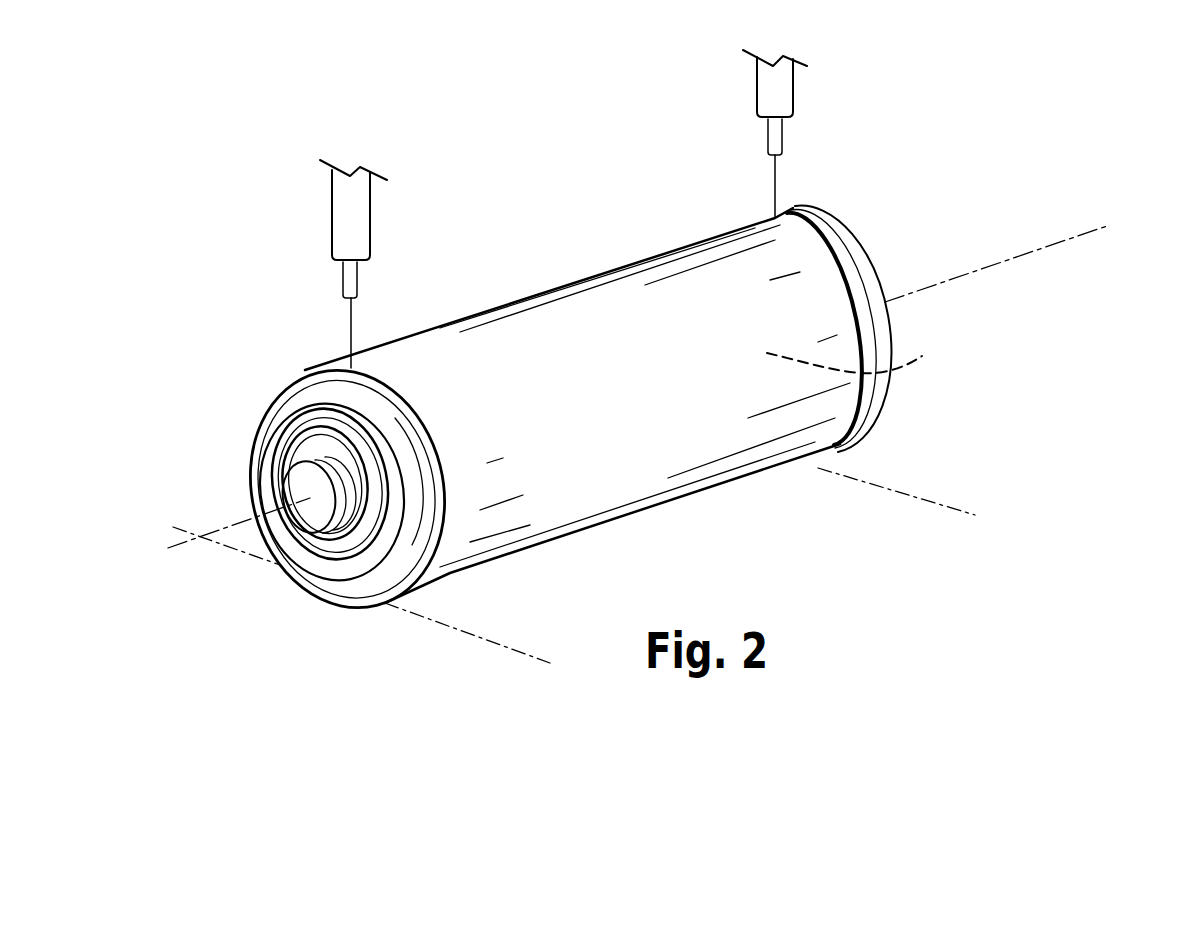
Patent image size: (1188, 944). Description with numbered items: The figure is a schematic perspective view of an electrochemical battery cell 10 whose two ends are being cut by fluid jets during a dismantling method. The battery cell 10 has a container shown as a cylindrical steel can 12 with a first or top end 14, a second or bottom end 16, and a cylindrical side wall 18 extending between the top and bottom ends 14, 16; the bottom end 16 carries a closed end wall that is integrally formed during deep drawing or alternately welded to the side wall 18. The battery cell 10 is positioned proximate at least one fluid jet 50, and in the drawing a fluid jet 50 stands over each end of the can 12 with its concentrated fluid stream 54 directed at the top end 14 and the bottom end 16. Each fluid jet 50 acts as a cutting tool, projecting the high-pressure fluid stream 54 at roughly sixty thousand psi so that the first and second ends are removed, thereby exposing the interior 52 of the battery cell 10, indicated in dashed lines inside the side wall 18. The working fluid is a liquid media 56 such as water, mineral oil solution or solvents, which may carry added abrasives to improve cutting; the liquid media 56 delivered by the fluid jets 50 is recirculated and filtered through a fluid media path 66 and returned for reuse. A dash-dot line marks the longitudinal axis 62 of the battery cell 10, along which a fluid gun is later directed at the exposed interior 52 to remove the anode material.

The electrochemical battery cell 10 is at (238, 272).
The cylindrical steel can 12 is at (594, 220).
The first or top end 14 is at (285, 420).
The second or bottom end 16 is at (848, 258).
The cylindrical side wall 18 is at (680, 443).
The fluid jet 50 is at (780, 133).
The interior 52 is at (861, 351).
The fluid stream 54 is at (777, 181).
The liquid media 56 is at (352, 326).
The longitudinal axis 62 is at (1070, 240).
The fluid media path 66 is at (360, 211).